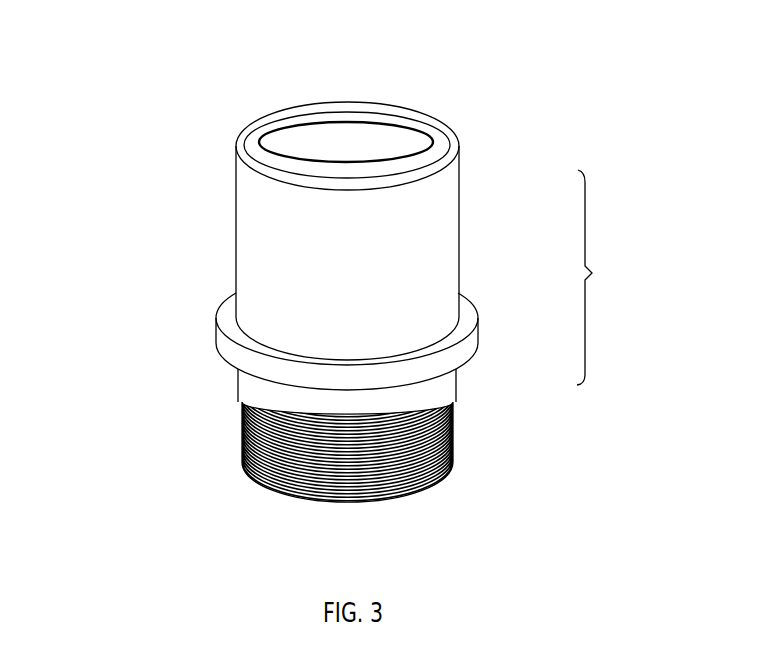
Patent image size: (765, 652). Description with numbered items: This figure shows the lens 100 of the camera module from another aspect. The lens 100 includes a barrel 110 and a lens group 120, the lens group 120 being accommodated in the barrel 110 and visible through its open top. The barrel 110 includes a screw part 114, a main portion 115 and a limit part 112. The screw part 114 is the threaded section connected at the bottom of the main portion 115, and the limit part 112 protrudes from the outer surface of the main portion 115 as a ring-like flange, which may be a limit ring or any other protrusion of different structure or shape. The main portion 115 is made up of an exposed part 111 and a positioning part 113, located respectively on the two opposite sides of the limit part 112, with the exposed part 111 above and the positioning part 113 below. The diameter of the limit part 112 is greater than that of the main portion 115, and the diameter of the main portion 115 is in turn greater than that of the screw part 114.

The lens 100 is at (115, 42).
The barrel 110 is at (218, 265).
The exposed part 111 is at (464, 237).
The limit part 112 is at (245, 358).
The positioning part 113 is at (472, 384).
The screw part 114 is at (245, 463).
The main portion 115 is at (607, 277).
The lens group 120 is at (375, 145).